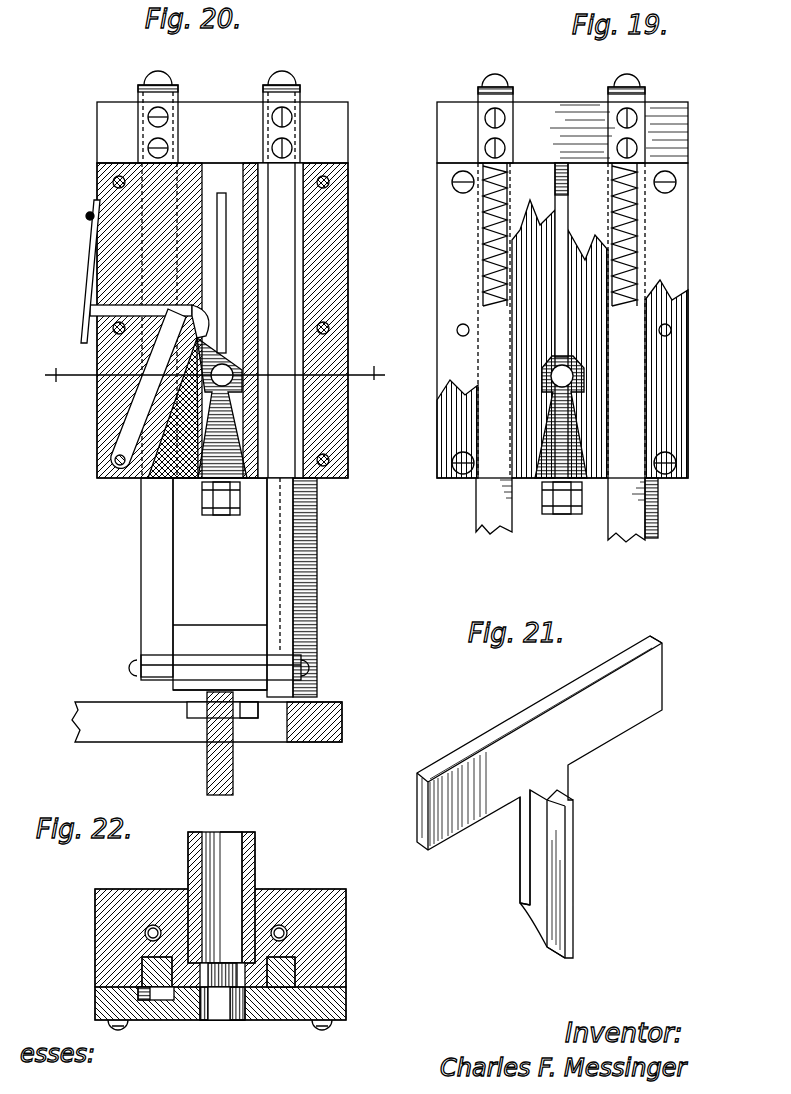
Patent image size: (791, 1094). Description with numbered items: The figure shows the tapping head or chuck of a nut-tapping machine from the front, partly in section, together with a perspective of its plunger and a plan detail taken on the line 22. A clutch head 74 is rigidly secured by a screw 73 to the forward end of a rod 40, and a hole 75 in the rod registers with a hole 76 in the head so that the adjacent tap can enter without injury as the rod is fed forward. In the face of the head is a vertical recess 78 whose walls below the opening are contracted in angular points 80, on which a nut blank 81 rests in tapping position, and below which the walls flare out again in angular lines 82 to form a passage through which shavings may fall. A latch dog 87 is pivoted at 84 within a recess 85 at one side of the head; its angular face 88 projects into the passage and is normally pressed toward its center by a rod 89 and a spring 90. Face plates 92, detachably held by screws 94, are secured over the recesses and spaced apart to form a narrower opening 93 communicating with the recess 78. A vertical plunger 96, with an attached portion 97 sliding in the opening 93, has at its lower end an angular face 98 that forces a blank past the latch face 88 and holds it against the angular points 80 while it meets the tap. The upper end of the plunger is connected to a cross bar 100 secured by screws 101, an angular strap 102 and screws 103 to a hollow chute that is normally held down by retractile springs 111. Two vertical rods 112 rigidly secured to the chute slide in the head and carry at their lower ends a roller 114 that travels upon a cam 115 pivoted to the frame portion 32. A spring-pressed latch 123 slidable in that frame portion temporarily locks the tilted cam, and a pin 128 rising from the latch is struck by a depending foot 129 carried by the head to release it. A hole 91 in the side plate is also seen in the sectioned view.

In FIG. 20, the section line 22 is at (213, 375).
In FIG. 20, the frame portion 32 is at (343, 716).
In FIG. 22, the rod 40 is at (252, 872).
In FIG. 20, the screw 73 is at (223, 505).
In FIG. 19, the screw 73 is at (563, 508).
In FIG. 22, the clutch head 74 is at (108, 925).
In FIG. 22, the hole 75 is at (226, 846).
In FIG. 19, the hole 76 is at (548, 362).
In FIG. 22, the hole 76 is at (222, 972).
In FIG. 20, the vertical recess 78 is at (228, 234).
In FIG. 20, the angular points 80 is at (140, 478).
In FIG. 20, the nut blank 81 is at (232, 382).
In FIG. 19, the nut blank 81 is at (572, 362).
In FIG. 22, the nut blank 81 is at (220, 1012).
In FIG. 20, the angular lines 82 is at (248, 440).
In FIG. 20, the pivot 84 is at (115, 462).
In FIG. 19, the pivot 84 is at (458, 478).
In FIG. 22, the pivot 84 is at (122, 1030).
In FIG. 20, the recess 85 is at (142, 386).
In FIG. 22, the recess 85 is at (158, 993).
In FIG. 20, the latch dog 87 is at (176, 347).
In FIG. 22, the latch dog 87 is at (166, 995).
In FIG. 20, the angular face 88 is at (205, 328).
In FIG. 20, the rod 89 is at (112, 307).
In FIG. 20, the spring 90 is at (80, 334).
In FIG. 20, the screw hole 91 is at (328, 182).
In FIG. 20, the face plates 92 is at (126, 164).
In FIG. 19, the face plates 92 is at (458, 220).
In FIG. 22, the face plates 92 is at (336, 1010).
In FIG. 19, the recess 93 is at (562, 180).
In FIG. 20, the screws 94 is at (113, 182).
In FIG. 19, the screws 94 is at (452, 182).
In FIG. 21, the vertical plunger 96 is at (530, 830).
In FIG. 21, the plunger portion 97 is at (572, 885).
In FIG. 21, the angular face 98 is at (560, 955).
In FIG. 20, the cross bar 100 is at (326, 104).
In FIG. 19, the cross bar 100 is at (452, 122).
In FIG. 21, the cross bar 100 is at (490, 762).
In FIG. 20, the screws 101 is at (168, 118).
In FIG. 19, the screws 101 is at (487, 118).
In FIG. 20, the angular strap 102 is at (265, 92).
In FIG. 19, the angular strap 102 is at (512, 102).
In FIG. 20, the screws 103 is at (282, 78).
In FIG. 19, the screws 103 is at (497, 84).
In FIG. 19, the retractile springs 111 is at (560, 234).
In FIG. 22, the retractile springs 111 is at (153, 924).
In FIG. 20, the vertical rods 112 is at (290, 216).
In FIG. 19, the vertical rods 112 is at (500, 520).
In FIG. 22, the vertical rods 112 is at (150, 966).
In FIG. 20, the roller 114 is at (188, 636).
In FIG. 20, the cam 115 is at (214, 754).
In FIG. 20, the latch 123 is at (250, 712).
In FIG. 20, the pin 128 is at (243, 682).
In FIG. 20, the depending foot 129 is at (316, 576).
In FIG. 19, the depending foot 129 is at (656, 514).